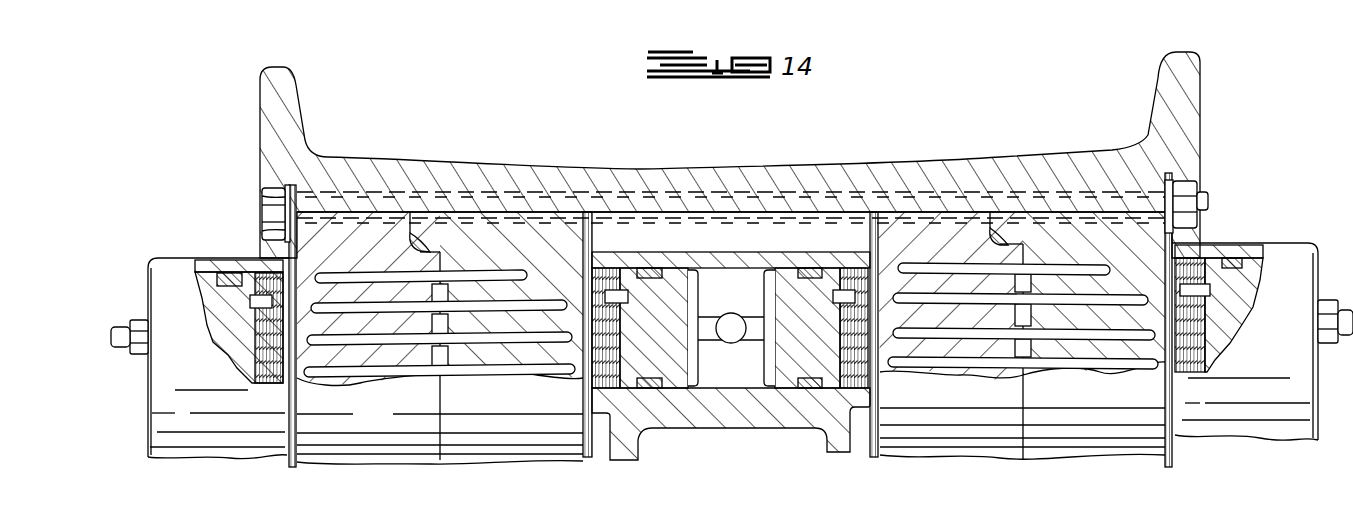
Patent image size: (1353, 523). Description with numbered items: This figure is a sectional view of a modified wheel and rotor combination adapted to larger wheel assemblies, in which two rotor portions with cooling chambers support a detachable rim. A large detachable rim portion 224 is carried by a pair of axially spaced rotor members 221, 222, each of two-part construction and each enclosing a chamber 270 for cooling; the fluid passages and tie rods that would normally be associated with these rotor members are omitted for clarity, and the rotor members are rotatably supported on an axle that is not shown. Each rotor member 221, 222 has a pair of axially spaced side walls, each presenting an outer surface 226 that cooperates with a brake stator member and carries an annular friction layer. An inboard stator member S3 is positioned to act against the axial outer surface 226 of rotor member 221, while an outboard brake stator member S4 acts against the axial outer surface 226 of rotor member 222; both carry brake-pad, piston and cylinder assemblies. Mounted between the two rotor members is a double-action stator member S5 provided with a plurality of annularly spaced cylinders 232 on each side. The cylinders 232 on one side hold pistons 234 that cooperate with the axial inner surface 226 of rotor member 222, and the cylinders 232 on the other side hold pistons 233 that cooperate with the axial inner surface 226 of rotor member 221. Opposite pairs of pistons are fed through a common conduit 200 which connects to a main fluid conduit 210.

The detachable rim portion 224 is at (748, 163).
The outer surface 226 is at (290, 462).
The chamber 270 is at (488, 338).
The common conduit 200 is at (742, 282).
The cylinders 232 is at (651, 257).
The pistons 233 is at (683, 385).
The pistons 234 is at (788, 380).
The main fluid conduit 210 is at (737, 345).
The rotor member 221 is at (470, 438).
The rotor member 222 is at (1102, 452).
The inboard stator member S3 is at (170, 257).
The outboard brake stator member S4 is at (1289, 240).
The double-action stator member S5 is at (845, 452).